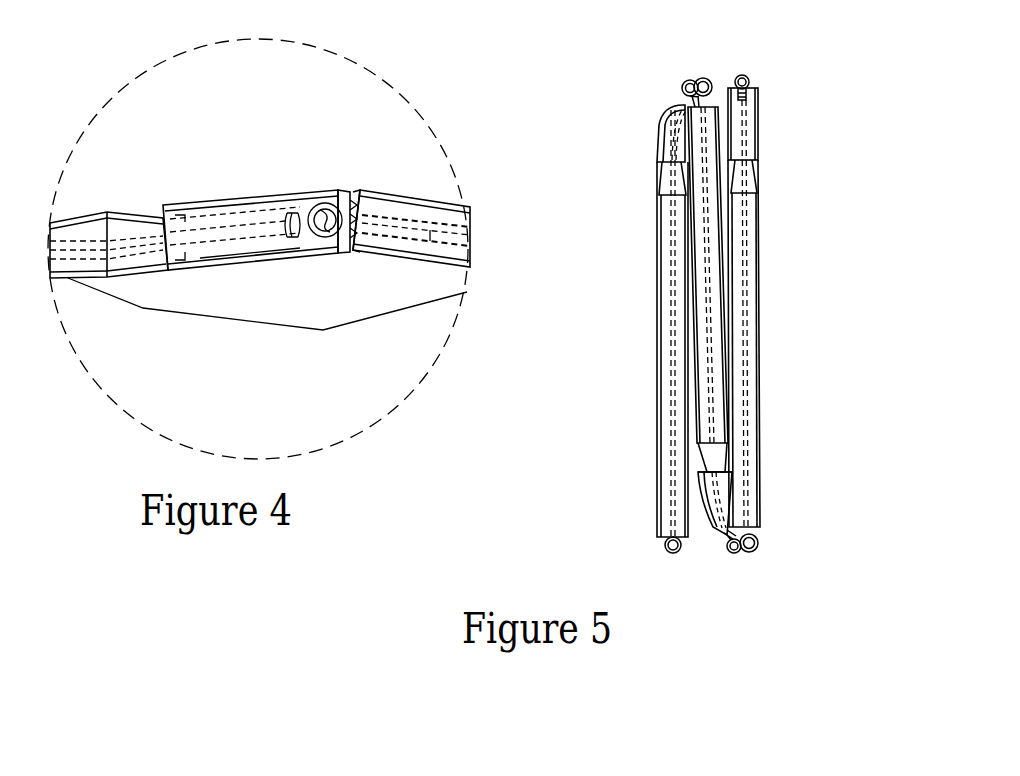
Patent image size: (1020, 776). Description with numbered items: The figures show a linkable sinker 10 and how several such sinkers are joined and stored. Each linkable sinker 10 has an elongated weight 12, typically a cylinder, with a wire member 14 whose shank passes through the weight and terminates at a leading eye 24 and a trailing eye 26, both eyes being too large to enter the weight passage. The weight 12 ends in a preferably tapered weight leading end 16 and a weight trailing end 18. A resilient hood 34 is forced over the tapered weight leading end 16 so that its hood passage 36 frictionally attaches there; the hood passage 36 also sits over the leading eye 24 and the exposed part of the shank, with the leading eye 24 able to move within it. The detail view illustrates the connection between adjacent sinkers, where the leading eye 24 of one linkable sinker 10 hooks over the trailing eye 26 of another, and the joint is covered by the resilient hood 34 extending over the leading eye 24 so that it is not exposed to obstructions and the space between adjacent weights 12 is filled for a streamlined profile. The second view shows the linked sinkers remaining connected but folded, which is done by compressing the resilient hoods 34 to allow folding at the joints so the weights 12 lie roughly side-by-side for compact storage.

In FIG. 4, the linkable sinker 10 is at (220, 138).
In FIG. 5, the linkable sinker 10 is at (688, 348).
In FIG. 4, the elongated weight 12 is at (107, 212).
In FIG. 5, the elongated weight 12 is at (727, 462).
In FIG. 4, the wire member 14 is at (192, 230).
In FIG. 5, the wire member 14 is at (742, 217).
In FIG. 4, the weight leading end 16 is at (133, 260).
In FIG. 4, the weight trailing end 18 is at (358, 250).
In FIG. 4, the leading eye 24 is at (307, 208).
In FIG. 5, the leading eye 24 is at (687, 84).
In FIG. 4, the trailing eye 26 is at (340, 190).
In FIG. 5, the trailing eye 26 is at (712, 73).
In FIG. 4, the resilient hood 34 is at (252, 197).
In FIG. 5, the resilient hood 34 is at (658, 128).
In FIG. 4, the hood passage 36 is at (273, 242).